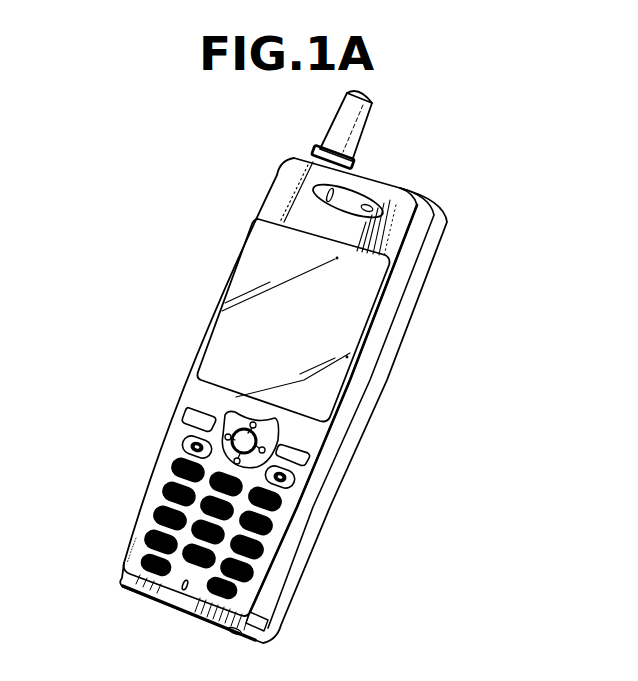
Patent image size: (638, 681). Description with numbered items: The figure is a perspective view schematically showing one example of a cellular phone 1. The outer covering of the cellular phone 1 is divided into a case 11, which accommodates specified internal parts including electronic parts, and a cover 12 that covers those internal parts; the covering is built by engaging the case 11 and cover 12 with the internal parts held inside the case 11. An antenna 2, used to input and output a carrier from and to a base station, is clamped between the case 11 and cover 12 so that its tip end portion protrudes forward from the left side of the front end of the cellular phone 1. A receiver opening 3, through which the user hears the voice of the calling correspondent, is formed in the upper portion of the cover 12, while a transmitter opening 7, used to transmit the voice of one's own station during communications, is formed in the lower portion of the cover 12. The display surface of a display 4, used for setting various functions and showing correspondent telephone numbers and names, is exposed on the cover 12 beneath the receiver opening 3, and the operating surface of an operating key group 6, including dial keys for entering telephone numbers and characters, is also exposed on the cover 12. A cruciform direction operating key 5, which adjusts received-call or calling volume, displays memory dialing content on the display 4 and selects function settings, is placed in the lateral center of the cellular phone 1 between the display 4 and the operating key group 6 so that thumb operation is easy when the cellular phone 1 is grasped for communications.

The cellular phone 1 is at (128, 463).
The antenna 2 is at (362, 101).
The receiver opening 3 is at (357, 197).
The display 4 is at (340, 373).
The cruciform direction operating key 5 is at (237, 416).
The operating key group 6 is at (274, 542).
The transmitter opening 7 is at (182, 588).
The case 11 is at (283, 634).
The cover 12 is at (282, 183).